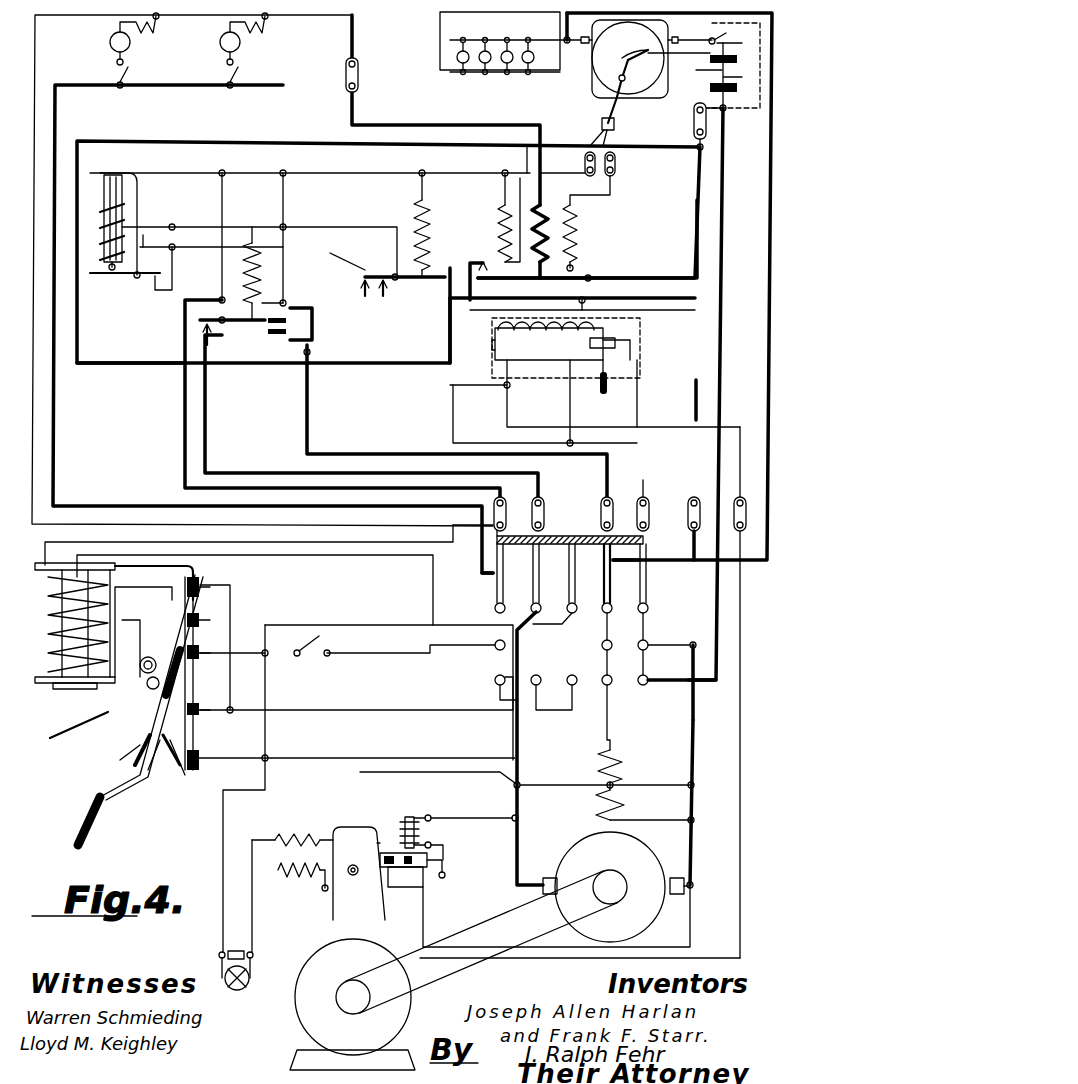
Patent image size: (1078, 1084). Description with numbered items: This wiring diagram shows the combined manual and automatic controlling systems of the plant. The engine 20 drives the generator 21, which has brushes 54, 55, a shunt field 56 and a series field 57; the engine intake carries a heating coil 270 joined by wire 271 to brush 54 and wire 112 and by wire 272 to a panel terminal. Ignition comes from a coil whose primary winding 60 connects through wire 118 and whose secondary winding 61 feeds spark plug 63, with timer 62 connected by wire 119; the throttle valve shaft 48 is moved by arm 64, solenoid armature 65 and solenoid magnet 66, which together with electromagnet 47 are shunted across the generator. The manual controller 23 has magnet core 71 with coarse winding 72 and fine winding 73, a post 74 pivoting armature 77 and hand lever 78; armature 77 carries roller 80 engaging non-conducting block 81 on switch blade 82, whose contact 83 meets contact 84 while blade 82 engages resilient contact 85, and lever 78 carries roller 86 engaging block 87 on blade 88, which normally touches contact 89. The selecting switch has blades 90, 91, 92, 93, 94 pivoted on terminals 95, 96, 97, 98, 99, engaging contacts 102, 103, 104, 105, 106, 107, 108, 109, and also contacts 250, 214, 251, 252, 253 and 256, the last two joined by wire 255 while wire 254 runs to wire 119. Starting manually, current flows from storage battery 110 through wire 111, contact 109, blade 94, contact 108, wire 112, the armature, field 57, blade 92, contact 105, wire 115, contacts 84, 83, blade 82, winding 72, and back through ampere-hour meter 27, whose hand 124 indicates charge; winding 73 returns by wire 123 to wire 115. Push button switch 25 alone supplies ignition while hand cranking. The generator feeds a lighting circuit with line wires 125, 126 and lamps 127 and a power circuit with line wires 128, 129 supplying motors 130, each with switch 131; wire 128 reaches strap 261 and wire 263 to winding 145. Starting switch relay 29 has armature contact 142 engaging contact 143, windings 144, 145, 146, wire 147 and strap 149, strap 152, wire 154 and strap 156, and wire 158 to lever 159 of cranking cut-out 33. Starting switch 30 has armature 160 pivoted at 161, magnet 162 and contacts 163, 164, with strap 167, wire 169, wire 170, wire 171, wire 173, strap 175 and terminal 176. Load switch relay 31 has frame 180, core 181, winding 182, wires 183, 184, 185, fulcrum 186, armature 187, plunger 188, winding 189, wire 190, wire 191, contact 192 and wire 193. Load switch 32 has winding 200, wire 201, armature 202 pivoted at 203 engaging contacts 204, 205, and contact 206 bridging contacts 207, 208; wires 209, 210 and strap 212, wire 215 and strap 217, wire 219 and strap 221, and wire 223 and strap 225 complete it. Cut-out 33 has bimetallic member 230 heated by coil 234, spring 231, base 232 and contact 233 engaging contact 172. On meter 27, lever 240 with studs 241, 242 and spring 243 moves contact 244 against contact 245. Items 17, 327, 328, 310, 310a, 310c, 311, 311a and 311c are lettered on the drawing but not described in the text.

The power line wire 128 is at (55, 14).
The electric motor 130 is at (108, 45).
The controlling switch 131 is at (130, 72).
The wire 190 is at (175, 142).
The wire 263 is at (430, 124).
The detachable strap 261 is at (362, 73).
The conductor 17 is at (768, 240).
The panel terminal 176 is at (645, 560).
The wire 111 is at (722, 196).
The detachable strap 221 is at (742, 497).
The power line wire 129 is at (57, 450).
The wire 210 is at (185, 420).
The wire 191 is at (140, 363).
The wire 215 is at (207, 440).
The contact 207 is at (250, 360).
The wire 219 is at (392, 385).
The wire 223 is at (552, 410).
The wire 173 is at (637, 443).
The line wire 125 is at (440, 35).
The lamp 127 is at (455, 60).
The line wire 126 is at (475, 40).
The terminal 328 is at (579, 28).
The ampere-hour meter 27 is at (605, 60).
The lever 240 is at (625, 40).
The stud 242 is at (644, 41).
The stud 241 is at (639, 78).
The spring 243 is at (600, 90).
The stationary contact 245 is at (598, 120).
The movable switch contact 244 is at (622, 128).
The hand 124 is at (668, 58).
The storage battery 110 is at (699, 69).
The battery cell 310 is at (706, 73).
The battery cell 310a is at (704, 93).
The conductor 327 is at (691, 26).
The switch 311a is at (713, 33).
The battery casing 311c is at (737, 62).
The battery 311 is at (742, 67).
The battery terminal 310c is at (724, 111).
The detachable strap 149 is at (693, 113).
The load switch relay 31 is at (50, 163).
The wire 209 is at (318, 172).
The frame 180 is at (139, 190).
The high resistance winding 182 is at (100, 218).
The stationary core 181 is at (104, 222).
The plunger 188 is at (100, 243).
The wire 185 is at (172, 224).
The low resistance magnet winding 189 is at (143, 247).
The wire 193 is at (173, 285).
The armature 187 is at (112, 272).
The contact 192 is at (155, 280).
The fulcrum 186 is at (136, 280).
The wire 183 is at (224, 175).
The wire 184 is at (285, 227).
The load switch 32 is at (258, 238).
The magnet winding 200 is at (262, 268).
The wire 201 is at (178, 248).
The pivot 161 is at (380, 260).
The armature 202 is at (265, 322).
The pivot 203 is at (222, 318).
The contact 205 is at (313, 317).
The contact 206 is at (313, 333).
The contact 208 is at (311, 351).
The contact 204 is at (270, 342).
The starting switch 30 is at (408, 193).
The wire 170 is at (477, 189).
The magnet 162 is at (436, 210).
The high resistance magnet winding 144 is at (498, 237).
The contact 143 is at (483, 270).
The wire 154 is at (527, 170).
The low resistance magnet winding 145 is at (540, 205).
The detachable strap 156 is at (585, 165).
The detachable strap 152 is at (615, 165).
The starting switch relay 29 is at (610, 233).
The high resistance magnet winding 146 is at (578, 255).
The wire 147 is at (696, 240).
The armature 160 is at (432, 280).
The movable armature contact 142 is at (560, 280).
The contact 163 is at (372, 295).
The contact 164 is at (386, 285).
The wire 171 is at (448, 300).
The coil 234 is at (545, 318).
The cranking cut-out 33 is at (553, 352).
The bimetallic member 230 is at (527, 331).
The non-conducting base 232 is at (477, 349).
The contact 233 is at (590, 341).
The spring 231 is at (619, 338).
The wire 158 is at (641, 350).
The contact 105 is at (696, 395).
The contact 172 is at (555, 372).
The movable lever 159 is at (603, 392).
The detachable strap 212 is at (502, 500).
The contact 251 is at (514, 526).
The detachable strap 217 is at (545, 518).
The detachable strap 225 is at (604, 500).
The contact 256 is at (632, 505).
The detachable strap 175 is at (681, 505).
The detachable strap 167 is at (694, 500).
The switch terminal 214 is at (495, 531).
The contact 253 is at (558, 537).
The contact 250 is at (516, 573).
The switch blade 90 is at (500, 600).
The terminal 95 is at (500, 618).
The switch blade 91 is at (525, 578).
The contact 252 is at (527, 584).
The switch blade 92 is at (562, 580).
The wire 255 is at (620, 572).
The terminal 98 is at (618, 608).
The switch blade 94 is at (650, 579).
The wire 169 is at (662, 611).
The terminal 99 is at (661, 607).
The contact 108 is at (648, 643).
The wire 112 is at (668, 687).
The contact 109 is at (648, 683).
The terminal 96 is at (534, 748).
The terminal 97 is at (560, 633).
The switch blade 93 is at (605, 626).
The contact 106 is at (613, 657).
The contact 107 is at (613, 712).
The contact 104 is at (551, 686).
The contact 102 is at (494, 646).
The contact 103 is at (494, 680).
The wire 254 is at (350, 625).
The wire 123 is at (232, 606).
The wire 119 is at (235, 650).
The push button switch 25 is at (325, 682).
The wire 115 is at (345, 710).
The magnet core 71 is at (92, 585).
The fine winding 73 is at (60, 615).
The coarse winding 72 is at (60, 660).
The armature 77 is at (55, 735).
The manual controller 23 is at (78, 765).
The roller 86 is at (147, 658).
The switch blade 88 is at (186, 625).
The non-conducting block 87 is at (186, 638).
The roller 80 is at (140, 666).
The non-conducting block 81 is at (192, 670).
The resiliently mounted contact 85 is at (192, 688).
The post 74 is at (134, 760).
The hand lever 78 is at (139, 769).
The contact 83 is at (150, 780).
The contact 89 is at (182, 767).
The switch blade 82 is at (186, 776).
The contact 84 is at (347, 788).
The primary winding 60 is at (300, 833).
The secondary winding 61 is at (296, 878).
The engine 20 is at (333, 920).
The spark plug 63 is at (353, 876).
The heating coil 270 is at (360, 843).
The timer 62 is at (240, 990).
The solenoid armature 65 is at (408, 816).
The solenoid magnet 66 is at (404, 826).
The wire 118 is at (470, 773).
The electromagnet 47 is at (440, 828).
The arm 64 is at (445, 878).
The throttle valve shaft 48 is at (405, 880).
The series field 57 is at (622, 765).
The shunt field 56 is at (620, 812).
The generator 21 is at (575, 850).
The brush 55 is at (545, 877).
The brush 54 is at (675, 877).
The wire 271 is at (470, 952).
The wire 272 is at (563, 958).